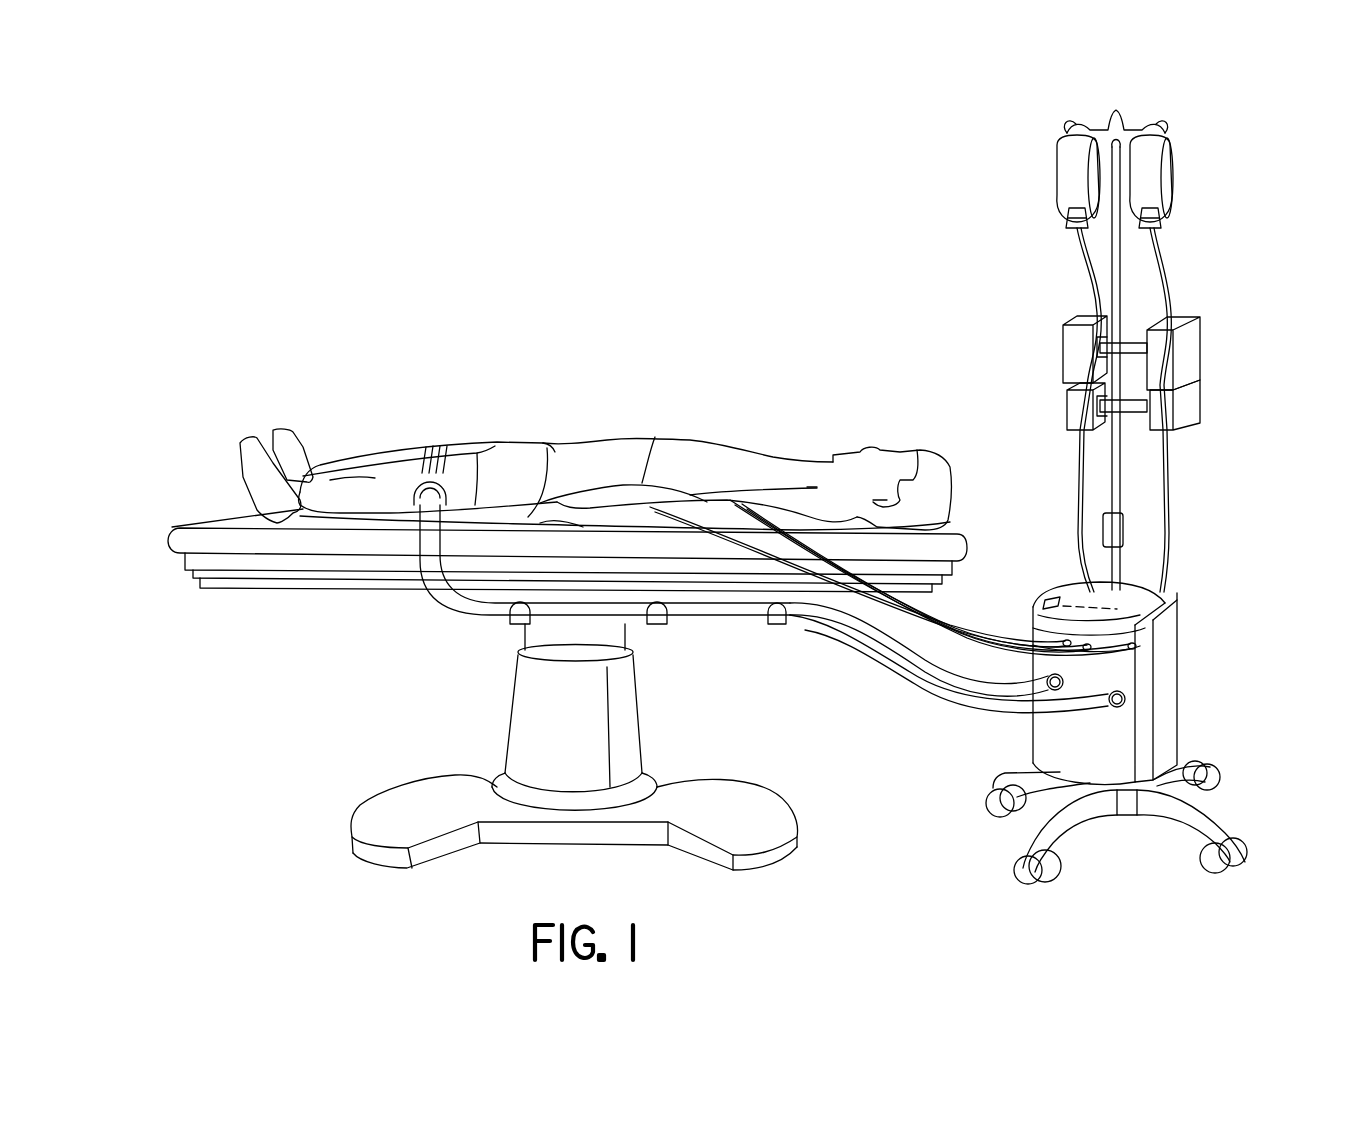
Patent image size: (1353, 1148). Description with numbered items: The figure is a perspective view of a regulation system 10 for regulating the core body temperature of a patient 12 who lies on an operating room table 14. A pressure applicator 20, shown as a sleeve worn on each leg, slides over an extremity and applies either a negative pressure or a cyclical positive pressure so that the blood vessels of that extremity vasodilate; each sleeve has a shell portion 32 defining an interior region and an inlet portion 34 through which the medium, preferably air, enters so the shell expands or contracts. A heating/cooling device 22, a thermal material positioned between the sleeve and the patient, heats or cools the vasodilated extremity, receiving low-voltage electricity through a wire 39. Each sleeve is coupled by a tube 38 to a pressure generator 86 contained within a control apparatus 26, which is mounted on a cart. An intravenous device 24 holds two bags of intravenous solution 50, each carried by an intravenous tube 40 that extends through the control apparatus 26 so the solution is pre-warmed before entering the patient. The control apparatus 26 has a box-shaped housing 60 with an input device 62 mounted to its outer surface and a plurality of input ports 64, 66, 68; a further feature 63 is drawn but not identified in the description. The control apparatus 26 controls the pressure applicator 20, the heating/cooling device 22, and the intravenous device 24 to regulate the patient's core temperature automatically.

The regulation system 10 is at (772, 288).
The patient 12 is at (780, 443).
The operating room table 14 is at (440, 722).
The pressure applicator 20 is at (538, 423).
The heating/cooling device 22 is at (560, 470).
The intravenous device 24 is at (1225, 372).
The control apparatus 26 is at (1159, 643).
The shell portion 32 is at (358, 502).
The inlet portion 34 is at (460, 490).
The tube 38 is at (895, 680).
The wire 39 is at (655, 437).
The intravenous tube 40 is at (1090, 280).
The intravenous solution 50 is at (1075, 165).
The housing 60 is at (1183, 741).
The input device 62 is at (1120, 600).
The keypad 63 is at (1170, 590).
The input port 64 is at (1068, 640).
The input port 66 is at (1173, 593).
The input port 68 is at (1093, 570).
The pressure generator 86 is at (1170, 623).